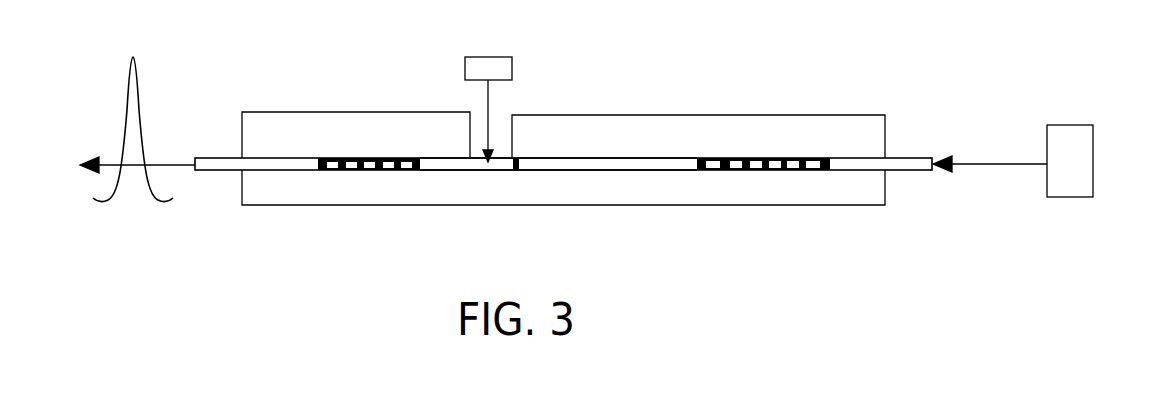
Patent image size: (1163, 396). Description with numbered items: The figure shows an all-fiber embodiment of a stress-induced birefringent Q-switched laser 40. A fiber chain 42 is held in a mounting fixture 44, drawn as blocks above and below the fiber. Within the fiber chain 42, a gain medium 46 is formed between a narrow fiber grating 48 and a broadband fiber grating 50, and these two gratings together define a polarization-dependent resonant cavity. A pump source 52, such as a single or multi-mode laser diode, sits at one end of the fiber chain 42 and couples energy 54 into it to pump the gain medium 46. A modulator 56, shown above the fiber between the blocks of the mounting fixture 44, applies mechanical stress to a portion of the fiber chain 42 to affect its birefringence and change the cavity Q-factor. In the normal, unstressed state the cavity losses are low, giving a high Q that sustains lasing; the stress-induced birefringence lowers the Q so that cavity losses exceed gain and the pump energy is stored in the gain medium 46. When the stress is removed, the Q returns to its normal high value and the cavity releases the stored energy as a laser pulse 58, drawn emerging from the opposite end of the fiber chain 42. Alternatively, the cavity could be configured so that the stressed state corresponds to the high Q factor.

The all-fiber Q-switched laser 40 is at (758, 75).
The fiber chain 42 is at (895, 155).
The mounting fixture 44 is at (578, 115).
The gain medium 46 is at (620, 179).
The narrow fiber grating 48 is at (295, 180).
The broadband fiber grating 50 is at (807, 180).
The pump source 52 is at (1093, 148).
The energy 54 is at (988, 163).
The modulator 56 is at (488, 56).
The laser pulse 58 is at (138, 103).